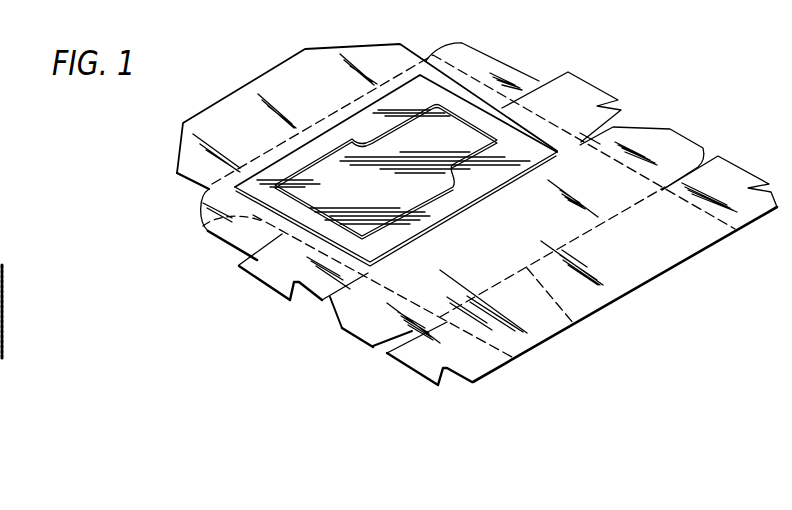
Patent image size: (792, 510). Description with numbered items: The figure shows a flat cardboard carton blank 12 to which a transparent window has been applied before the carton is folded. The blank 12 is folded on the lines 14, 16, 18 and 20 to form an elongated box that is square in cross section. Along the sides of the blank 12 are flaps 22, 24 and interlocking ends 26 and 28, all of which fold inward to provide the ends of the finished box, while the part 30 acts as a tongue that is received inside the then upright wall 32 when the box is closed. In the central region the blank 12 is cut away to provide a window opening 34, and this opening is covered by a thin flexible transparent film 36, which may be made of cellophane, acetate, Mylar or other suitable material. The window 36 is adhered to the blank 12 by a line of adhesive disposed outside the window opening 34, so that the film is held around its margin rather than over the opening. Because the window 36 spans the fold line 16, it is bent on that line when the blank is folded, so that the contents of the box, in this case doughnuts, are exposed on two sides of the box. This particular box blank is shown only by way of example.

The blank 12 is at (528, 226).
The fold line 14 is at (423, 64).
The fold line 16 is at (222, 233).
The fold line 18 is at (622, 127).
The fold line 20 is at (575, 326).
The flap 22 is at (473, 58).
The flap 24 is at (668, 132).
The interlocking end 26 is at (573, 83).
The interlocking end 28 is at (735, 172).
The tongue part 30 is at (285, 77).
The upright wall 32 is at (652, 255).
The window opening 34 is at (407, 118).
The transparent film window 36 is at (387, 198).